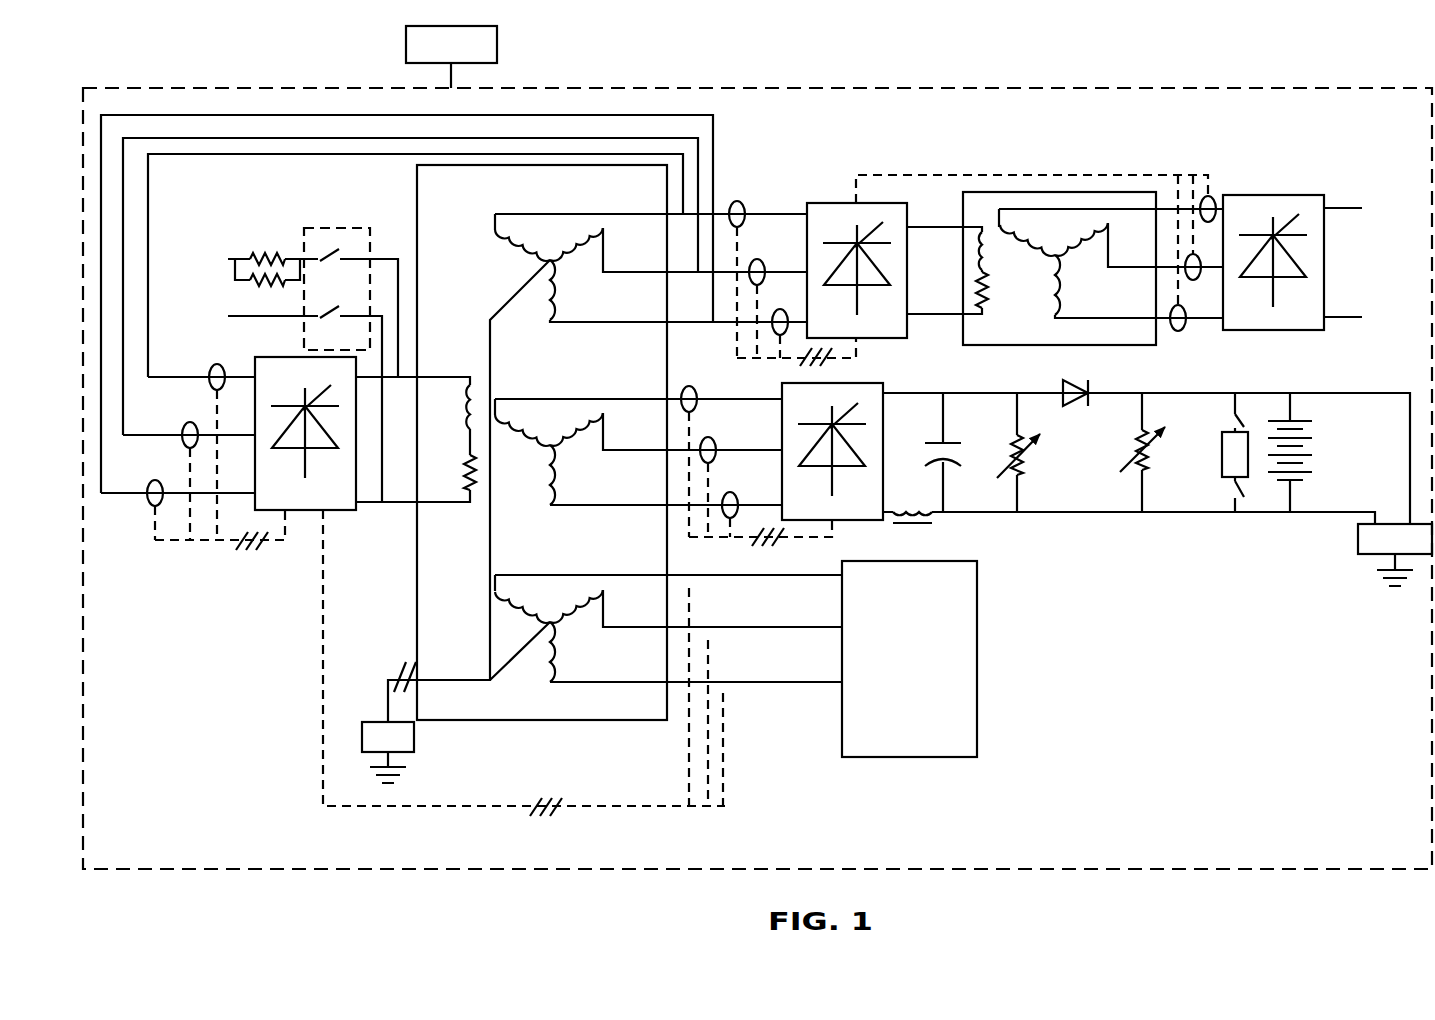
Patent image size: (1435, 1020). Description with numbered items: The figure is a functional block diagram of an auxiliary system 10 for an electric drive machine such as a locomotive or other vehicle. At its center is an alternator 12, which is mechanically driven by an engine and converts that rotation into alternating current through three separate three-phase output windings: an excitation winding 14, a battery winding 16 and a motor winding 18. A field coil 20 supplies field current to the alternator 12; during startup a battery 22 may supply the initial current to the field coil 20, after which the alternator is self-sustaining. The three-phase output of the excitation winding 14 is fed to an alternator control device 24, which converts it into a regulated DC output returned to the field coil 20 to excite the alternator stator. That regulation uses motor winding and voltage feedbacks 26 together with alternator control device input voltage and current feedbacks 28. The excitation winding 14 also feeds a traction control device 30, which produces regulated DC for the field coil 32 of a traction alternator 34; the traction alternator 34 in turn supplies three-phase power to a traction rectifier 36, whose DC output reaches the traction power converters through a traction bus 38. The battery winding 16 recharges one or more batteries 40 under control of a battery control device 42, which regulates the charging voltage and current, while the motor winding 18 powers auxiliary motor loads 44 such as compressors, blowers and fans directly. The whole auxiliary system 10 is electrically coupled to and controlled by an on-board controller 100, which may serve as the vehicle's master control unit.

The auxiliary system 10 is at (1098, 76).
The on-board controller 100 is at (498, 40).
The alternator 12 is at (492, 722).
The excitation winding 14 is at (527, 270).
The battery winding 16 is at (538, 455).
The motor winding 18 is at (560, 629).
The field coil 20 is at (468, 512).
The battery 22 is at (266, 248).
The alternator control device 24 is at (343, 512).
The motor winding and voltage feedbacks 26 is at (321, 806).
The alternator control device input voltage and current feedbacks 28 is at (152, 540).
The traction control device 30 is at (844, 202).
The field coil 32 is at (958, 270).
The traction alternator 34 is at (1074, 192).
The traction rectifier 36 is at (1275, 195).
The traction bus 38 is at (1390, 252).
The batteries 40 is at (1335, 430).
The battery control device 42 is at (822, 383).
The auxiliary motor loads 44 is at (924, 673).